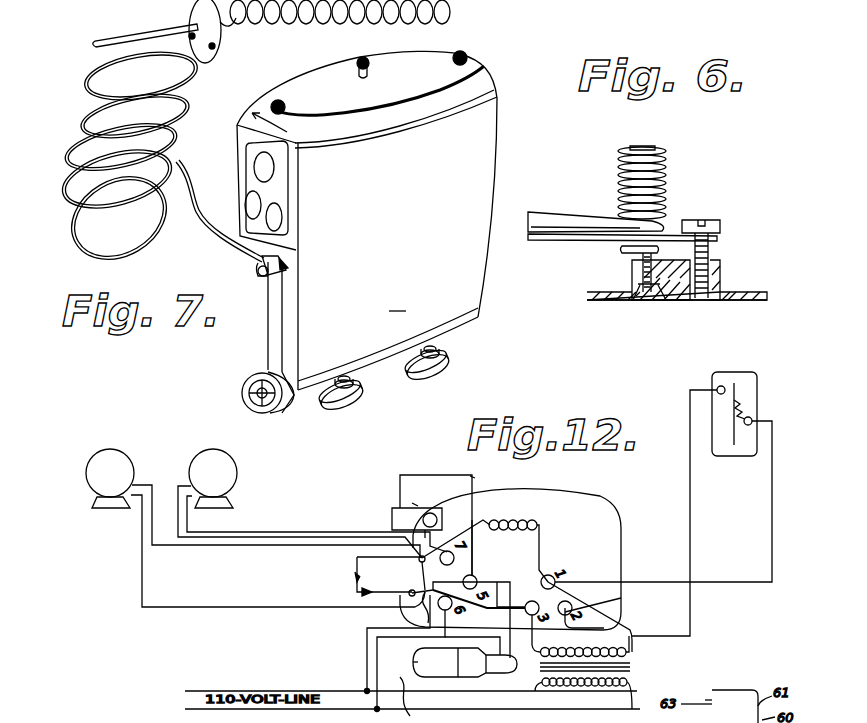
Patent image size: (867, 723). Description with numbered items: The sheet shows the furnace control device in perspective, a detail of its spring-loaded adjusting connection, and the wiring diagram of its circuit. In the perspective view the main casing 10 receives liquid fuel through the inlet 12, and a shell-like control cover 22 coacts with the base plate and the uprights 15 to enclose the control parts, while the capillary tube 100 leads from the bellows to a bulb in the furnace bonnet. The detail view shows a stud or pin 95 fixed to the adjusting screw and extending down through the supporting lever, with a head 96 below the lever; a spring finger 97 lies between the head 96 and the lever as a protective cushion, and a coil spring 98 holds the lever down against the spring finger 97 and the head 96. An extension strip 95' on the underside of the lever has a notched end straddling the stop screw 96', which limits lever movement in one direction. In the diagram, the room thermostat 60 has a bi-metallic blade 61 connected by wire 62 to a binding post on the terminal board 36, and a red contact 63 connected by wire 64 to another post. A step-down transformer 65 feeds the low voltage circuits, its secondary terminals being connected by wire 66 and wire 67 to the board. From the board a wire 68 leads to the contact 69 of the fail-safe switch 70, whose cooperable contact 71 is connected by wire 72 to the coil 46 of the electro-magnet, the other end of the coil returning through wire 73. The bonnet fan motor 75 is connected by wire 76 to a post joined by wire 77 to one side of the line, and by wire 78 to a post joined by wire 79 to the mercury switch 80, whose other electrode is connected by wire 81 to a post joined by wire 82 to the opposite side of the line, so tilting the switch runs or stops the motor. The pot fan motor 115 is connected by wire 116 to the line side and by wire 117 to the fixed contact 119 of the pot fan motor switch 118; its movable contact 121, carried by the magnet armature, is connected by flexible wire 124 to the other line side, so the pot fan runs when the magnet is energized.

In FIG. 7, the main casing 10 is at (259, 348).
In FIG. 7, the inlet 12 is at (300, 400).
In FIG. 7, the uprights 15 is at (290, 200).
In FIG. 7, the control cover 22 is at (420, 165).
In FIG. 7, the capillary tube 100 is at (158, 232).
In FIG. 6, the stud or pin 95 is at (654, 134).
In FIG. 6, the extension strip 95' is at (622, 214).
In FIG. 6, the head 96 is at (618, 269).
In FIG. 6, the stop screw 96' is at (712, 245).
In FIG. 6, the spring finger 97 is at (556, 240).
In FIG. 6, the coil spring 98 is at (622, 156).
In FIG. 12, the terminal board 36 is at (608, 568).
In FIG. 12, the coil 46 is at (530, 515).
In FIG. 12, the room thermostat 60 is at (761, 386).
In FIG. 12, the blade 61 is at (740, 372).
In FIG. 12, the wire 62 is at (772, 530).
In FIG. 12, the red contact 63 is at (721, 386).
In FIG. 12, the wire 64 is at (690, 505).
In FIG. 12, the step-down transformer 65 is at (634, 666).
In FIG. 12, the wire 66 is at (630, 626).
In FIG. 12, the wire 67 is at (535, 641).
In FIG. 12, the wire 68 is at (510, 582).
In FIG. 12, the contact 69 is at (395, 592).
In FIG. 12, the fail-safe switch 70 is at (351, 596).
In FIG. 12, the contact 71 is at (344, 579).
In FIG. 12, the wire 72 is at (474, 538).
In FIG. 12, the wire 73 is at (541, 552).
In FIG. 12, the bonnet fan motor 75 is at (137, 452).
In FIG. 12, the wire 76 is at (165, 548).
In FIG. 12, the wire 77 is at (367, 638).
In FIG. 12, the wire 78 is at (232, 608).
In FIG. 12, the wire 79 is at (458, 677).
In FIG. 12, the mercury switch 80 is at (406, 664).
In FIG. 12, the wire 81 is at (505, 673).
In FIG. 12, the wire 82 is at (413, 700).
In FIG. 12, the pot fan motor 115 is at (245, 457).
In FIG. 12, the wire 116 is at (176, 492).
In FIG. 12, the wire 117 is at (238, 525).
In FIG. 12, the pot fan motor switch 118 is at (412, 505).
In FIG. 12, the fixed contact 119 is at (380, 531).
In FIG. 12, the movable contact 121 is at (404, 496).
In FIG. 12, the flexible wire 124 is at (474, 478).